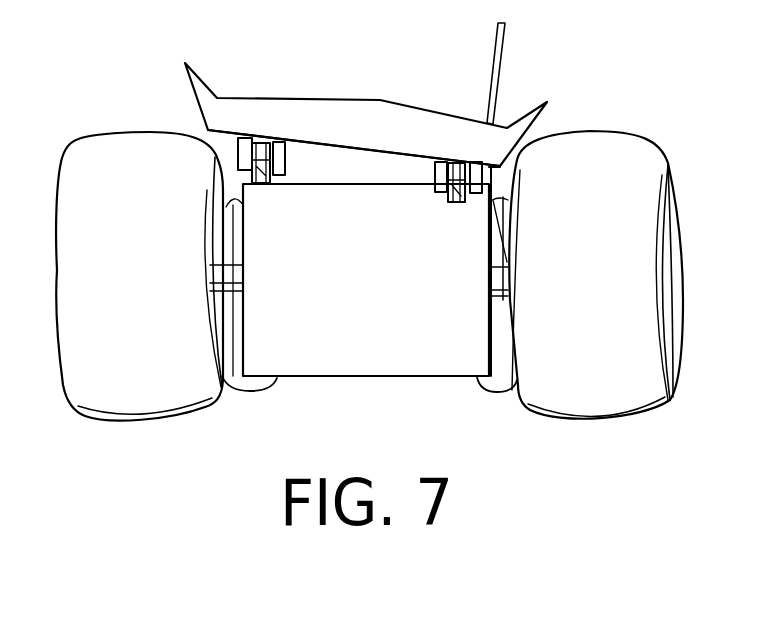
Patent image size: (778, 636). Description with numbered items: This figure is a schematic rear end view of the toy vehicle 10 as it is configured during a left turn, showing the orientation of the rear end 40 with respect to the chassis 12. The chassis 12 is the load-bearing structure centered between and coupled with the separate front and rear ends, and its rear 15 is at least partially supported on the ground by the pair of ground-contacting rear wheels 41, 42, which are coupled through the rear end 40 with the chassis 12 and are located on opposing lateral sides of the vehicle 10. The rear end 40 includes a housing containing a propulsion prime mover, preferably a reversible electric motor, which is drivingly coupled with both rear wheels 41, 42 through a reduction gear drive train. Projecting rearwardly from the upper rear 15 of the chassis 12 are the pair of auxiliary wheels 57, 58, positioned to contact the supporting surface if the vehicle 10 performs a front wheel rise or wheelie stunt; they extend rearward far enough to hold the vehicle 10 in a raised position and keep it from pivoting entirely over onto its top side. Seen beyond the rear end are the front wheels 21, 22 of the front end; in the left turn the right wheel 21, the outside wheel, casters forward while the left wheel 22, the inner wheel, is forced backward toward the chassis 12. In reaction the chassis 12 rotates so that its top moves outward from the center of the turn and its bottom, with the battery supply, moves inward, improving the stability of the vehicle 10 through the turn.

The toy vehicle 10 is at (620, 77).
The chassis 12 is at (352, 122).
The rear 15 is at (323, 157).
The rear end 40 is at (387, 309).
The rear wheel 41 is at (590, 317).
The rear wheel 42 is at (150, 315).
The auxiliary wheel 57 is at (452, 203).
The auxiliary wheel 58 is at (265, 186).
The front wheel 21 is at (495, 393).
The front wheel 22 is at (250, 389).